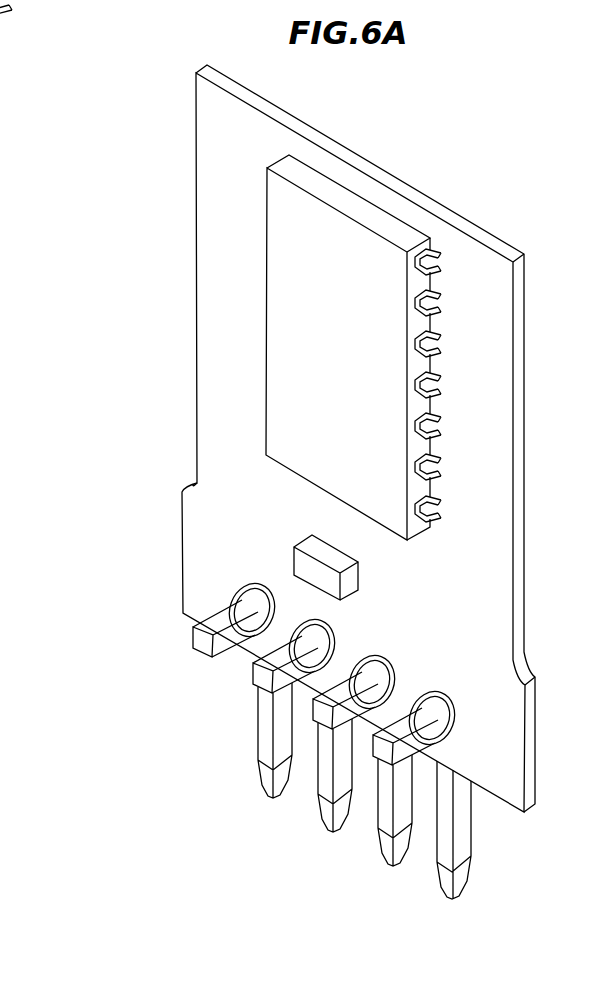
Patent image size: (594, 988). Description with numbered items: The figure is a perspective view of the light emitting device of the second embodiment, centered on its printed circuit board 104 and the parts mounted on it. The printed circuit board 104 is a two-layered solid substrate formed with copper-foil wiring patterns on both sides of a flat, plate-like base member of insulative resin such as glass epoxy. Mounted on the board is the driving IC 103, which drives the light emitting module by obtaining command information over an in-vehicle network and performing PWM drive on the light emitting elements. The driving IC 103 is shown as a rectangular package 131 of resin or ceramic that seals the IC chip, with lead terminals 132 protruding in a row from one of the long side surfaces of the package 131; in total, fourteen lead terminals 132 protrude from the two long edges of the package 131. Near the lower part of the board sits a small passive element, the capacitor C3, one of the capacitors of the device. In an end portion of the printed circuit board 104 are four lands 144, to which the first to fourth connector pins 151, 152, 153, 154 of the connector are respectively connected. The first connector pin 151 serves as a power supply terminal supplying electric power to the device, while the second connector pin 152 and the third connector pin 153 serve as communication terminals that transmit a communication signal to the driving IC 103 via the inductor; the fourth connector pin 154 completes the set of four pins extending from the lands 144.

The printed circuit board 104 is at (370, 161).
The driving IC 103 is at (293, 262).
The lead terminals 132 is at (440, 343).
The package 131 is at (428, 522).
The capacitor C3 is at (305, 567).
The lands 144 is at (435, 687).
The fourth connector pin 154 is at (270, 775).
The third connector pin 153 is at (330, 808).
The second connector pin 152 is at (390, 845).
The first connector pin 151 is at (444, 877).